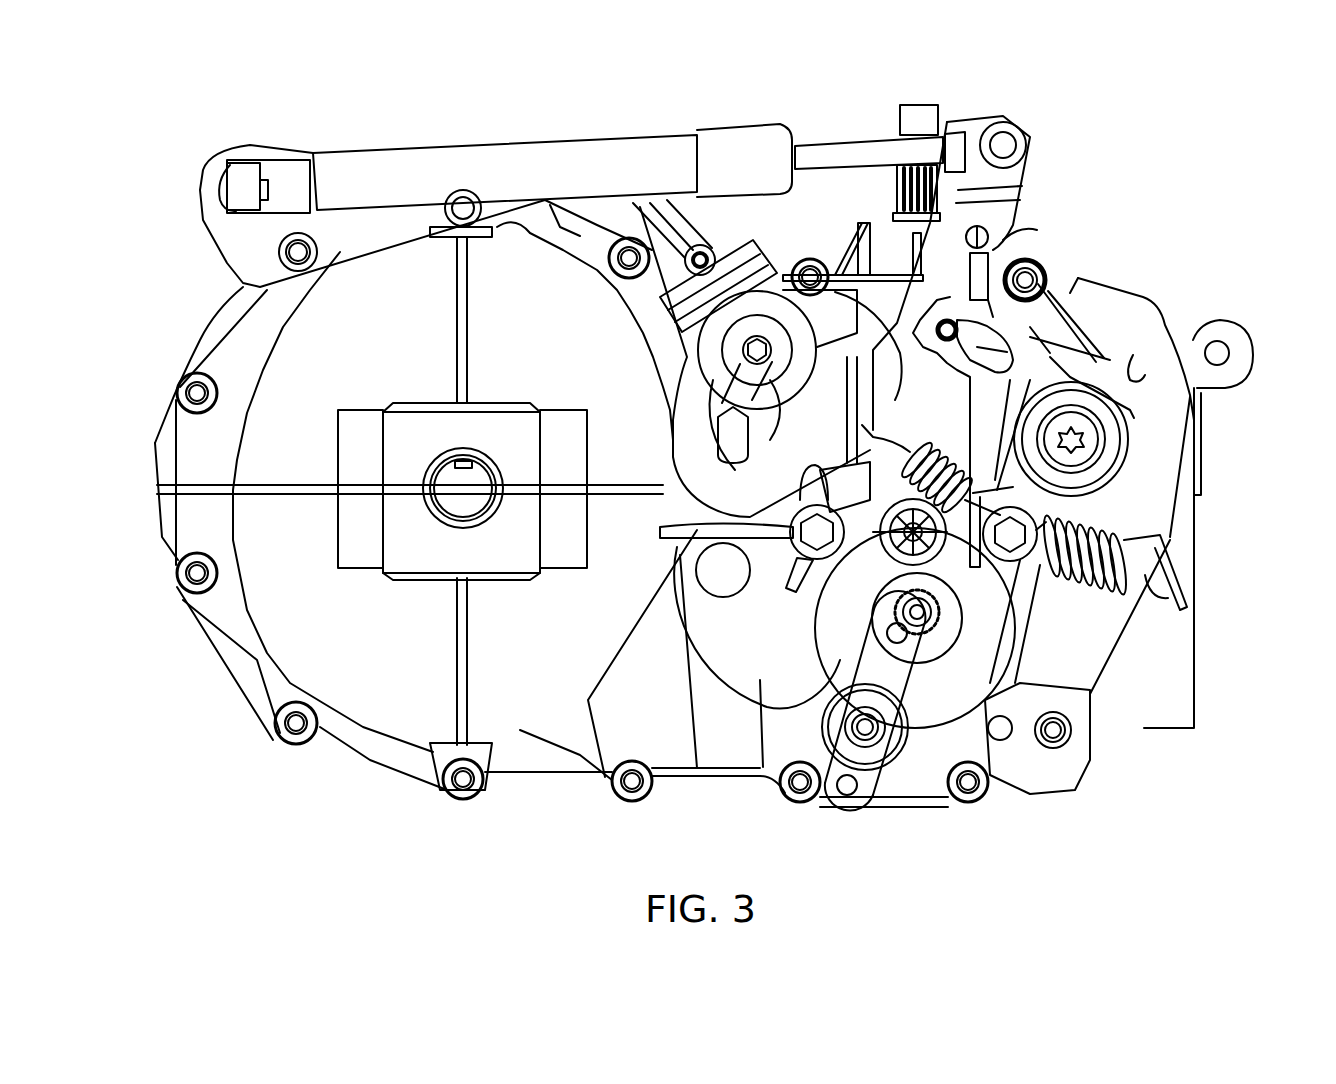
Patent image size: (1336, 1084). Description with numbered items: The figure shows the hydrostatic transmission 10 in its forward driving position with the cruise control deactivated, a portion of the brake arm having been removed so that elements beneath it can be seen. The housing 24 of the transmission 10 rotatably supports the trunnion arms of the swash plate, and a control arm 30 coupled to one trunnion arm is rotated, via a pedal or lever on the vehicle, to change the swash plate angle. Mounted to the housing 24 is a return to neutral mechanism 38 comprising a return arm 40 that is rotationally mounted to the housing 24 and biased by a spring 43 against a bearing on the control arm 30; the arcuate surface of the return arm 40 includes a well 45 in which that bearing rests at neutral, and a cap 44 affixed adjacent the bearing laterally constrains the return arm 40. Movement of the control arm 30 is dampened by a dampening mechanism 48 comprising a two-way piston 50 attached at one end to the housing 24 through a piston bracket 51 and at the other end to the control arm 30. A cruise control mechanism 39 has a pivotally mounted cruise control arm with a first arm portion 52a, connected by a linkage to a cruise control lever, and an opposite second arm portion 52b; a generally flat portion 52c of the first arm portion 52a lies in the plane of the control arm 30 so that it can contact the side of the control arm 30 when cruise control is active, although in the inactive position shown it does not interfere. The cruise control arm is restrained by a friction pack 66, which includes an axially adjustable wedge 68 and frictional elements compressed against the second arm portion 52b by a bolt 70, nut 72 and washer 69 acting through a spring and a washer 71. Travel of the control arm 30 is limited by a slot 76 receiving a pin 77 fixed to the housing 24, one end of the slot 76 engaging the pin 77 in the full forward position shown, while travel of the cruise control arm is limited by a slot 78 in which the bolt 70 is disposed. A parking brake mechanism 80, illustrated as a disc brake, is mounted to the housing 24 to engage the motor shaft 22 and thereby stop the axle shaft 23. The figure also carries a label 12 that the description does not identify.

The hydrostatic transmission 10 is at (1142, 184).
The stop block 12 is at (920, 103).
The motor shaft 22 is at (927, 605).
The axle shaft 23 is at (478, 501).
The housing 24 is at (913, 782).
The control arm 30 is at (1012, 188).
The return to neutral mechanism 38 is at (1178, 521).
The cruise control mechanism 39 is at (797, 231).
The return arm 40 is at (1138, 315).
The spring 43 is at (1073, 573).
The cap 44 is at (1112, 453).
The well 45 is at (1137, 370).
The dampening mechanism 48 is at (678, 102).
The two-way piston 50 is at (595, 128).
The piston bracket 51 is at (250, 240).
The first arm portion 52a is at (1228, 338).
The second arm portion 52b is at (680, 430).
The portion of the cruise control arm 52c is at (949, 378).
The friction pack 66 is at (677, 356).
The wedge 68 is at (745, 253).
The washer 69 is at (770, 377).
The bolt 70 is at (688, 462).
The washer 71 is at (770, 400).
The nut 72 is at (762, 358).
The slot 76 is at (1073, 278).
The pin 77 is at (992, 258).
The slot 78 is at (733, 450).
The parking brake mechanism 80 is at (802, 648).